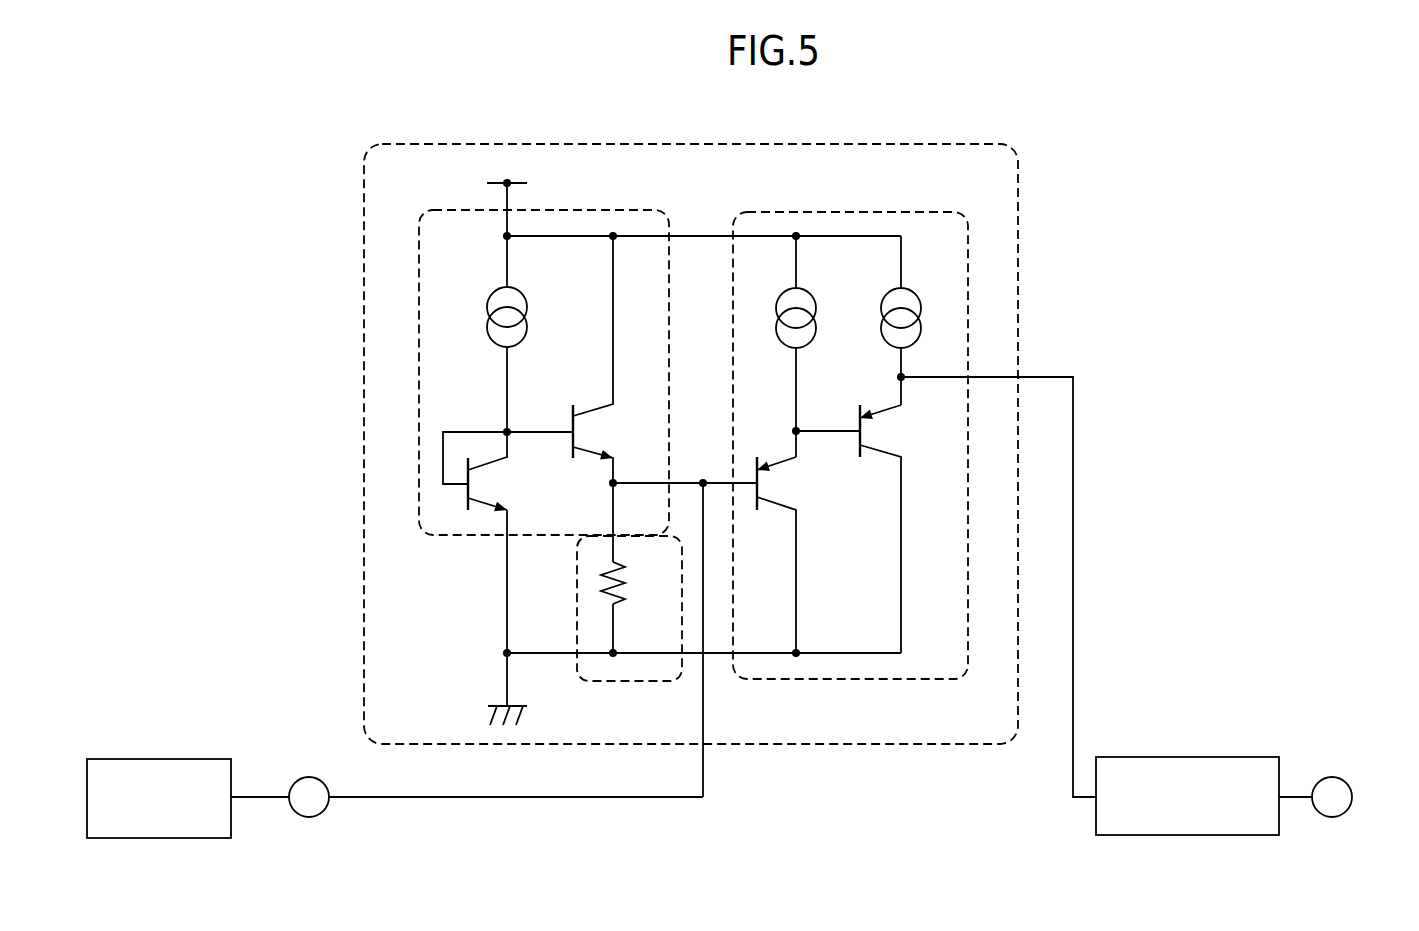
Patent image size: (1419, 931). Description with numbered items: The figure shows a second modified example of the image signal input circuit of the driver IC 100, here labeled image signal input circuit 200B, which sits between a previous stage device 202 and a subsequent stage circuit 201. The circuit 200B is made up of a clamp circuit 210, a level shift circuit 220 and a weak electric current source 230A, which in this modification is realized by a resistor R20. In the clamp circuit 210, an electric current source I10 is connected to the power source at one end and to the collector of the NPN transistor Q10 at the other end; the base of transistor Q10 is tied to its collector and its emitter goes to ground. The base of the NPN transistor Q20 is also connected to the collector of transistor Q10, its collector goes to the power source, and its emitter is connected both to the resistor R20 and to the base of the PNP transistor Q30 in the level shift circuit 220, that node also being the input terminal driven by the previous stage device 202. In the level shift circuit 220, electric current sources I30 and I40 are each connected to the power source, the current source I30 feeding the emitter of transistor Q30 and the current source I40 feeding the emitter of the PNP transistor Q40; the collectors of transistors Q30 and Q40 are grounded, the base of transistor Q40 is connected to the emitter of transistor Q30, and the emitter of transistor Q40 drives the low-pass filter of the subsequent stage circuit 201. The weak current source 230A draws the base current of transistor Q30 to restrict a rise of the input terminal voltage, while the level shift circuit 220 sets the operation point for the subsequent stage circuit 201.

The driver IC 100 is at (1119, 117).
The image signal input circuit 200B is at (942, 143).
The clamp circuit 210 is at (588, 210).
The level shift circuit 220 is at (887, 208).
The weak electric current source 230A is at (633, 683).
The subsequent stage circuit 201 is at (1188, 757).
The previous stage device 202 is at (168, 759).
The electric current source I10 is at (529, 347).
The electric current source I30 is at (817, 346).
The electric current source I40 is at (921, 320).
The transistor Q10 is at (499, 542).
The transistor Q20 is at (583, 359).
The transistor Q30 is at (800, 555).
The transistor Q40 is at (872, 529).
The resistor R20 is at (638, 568).